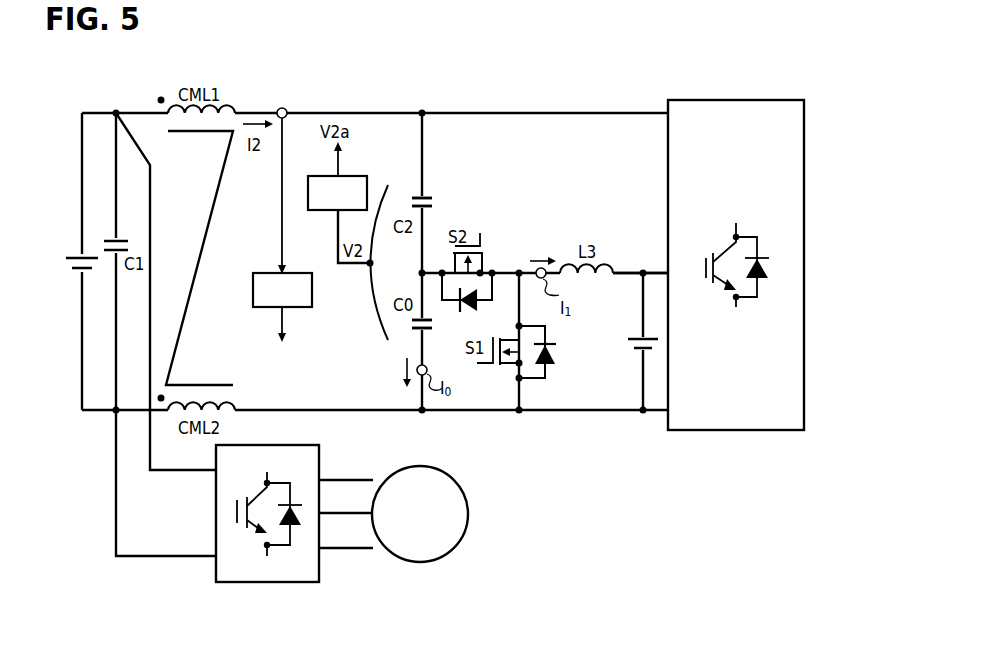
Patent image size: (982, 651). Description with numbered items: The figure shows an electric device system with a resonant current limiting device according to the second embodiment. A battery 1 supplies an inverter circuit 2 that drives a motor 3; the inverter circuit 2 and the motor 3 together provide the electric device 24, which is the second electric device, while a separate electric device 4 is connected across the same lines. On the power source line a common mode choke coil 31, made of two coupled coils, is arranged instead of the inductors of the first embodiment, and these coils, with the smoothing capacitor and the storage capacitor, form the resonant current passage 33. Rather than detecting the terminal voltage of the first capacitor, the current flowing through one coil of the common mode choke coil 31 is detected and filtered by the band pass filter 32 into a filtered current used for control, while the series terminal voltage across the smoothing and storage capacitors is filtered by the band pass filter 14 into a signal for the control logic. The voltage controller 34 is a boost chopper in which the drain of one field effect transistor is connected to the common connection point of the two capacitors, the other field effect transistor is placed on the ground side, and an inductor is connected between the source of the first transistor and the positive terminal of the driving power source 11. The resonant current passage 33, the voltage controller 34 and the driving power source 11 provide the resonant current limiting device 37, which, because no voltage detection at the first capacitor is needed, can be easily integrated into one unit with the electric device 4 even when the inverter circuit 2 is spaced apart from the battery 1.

The battery 1 is at (63, 263).
The inverter circuit 2 is at (266, 583).
The motor 3 is at (470, 514).
The electric device 4 is at (737, 100).
The driving power source 11 is at (631, 352).
The band pass filter 14 is at (318, 211).
The electric device 24 is at (351, 566).
The common mode choke coil 31 is at (216, 78).
The band pass filter 32 is at (258, 272).
The resonant current passage 33 is at (368, 104).
The voltage controller 34 is at (612, 234).
The resonant current limiting device 37 is at (537, 222).